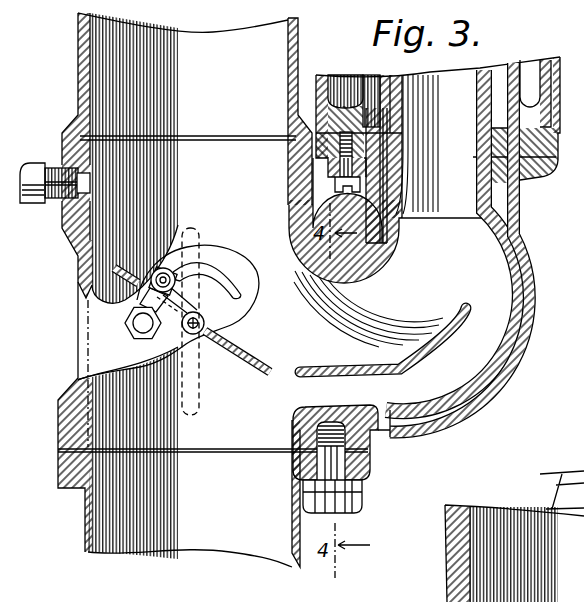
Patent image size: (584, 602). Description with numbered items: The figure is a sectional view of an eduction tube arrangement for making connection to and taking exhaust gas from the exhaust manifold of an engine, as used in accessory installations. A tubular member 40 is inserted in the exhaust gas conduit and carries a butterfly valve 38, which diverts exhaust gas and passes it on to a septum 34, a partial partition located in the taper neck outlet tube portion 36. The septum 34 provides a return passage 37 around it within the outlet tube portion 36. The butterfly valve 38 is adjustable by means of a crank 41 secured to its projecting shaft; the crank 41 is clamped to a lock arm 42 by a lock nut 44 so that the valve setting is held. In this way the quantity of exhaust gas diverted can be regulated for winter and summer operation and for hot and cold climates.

The septum 34 is at (412, 357).
The taper neck outlet tube portion 36 is at (494, 263).
The return passage 37 is at (466, 356).
The butterfly valve 38 is at (257, 358).
The tubular member 40 is at (93, 240).
The crank 41 is at (181, 312).
The lock arm 42 is at (228, 279).
The lock nut 44 is at (165, 268).